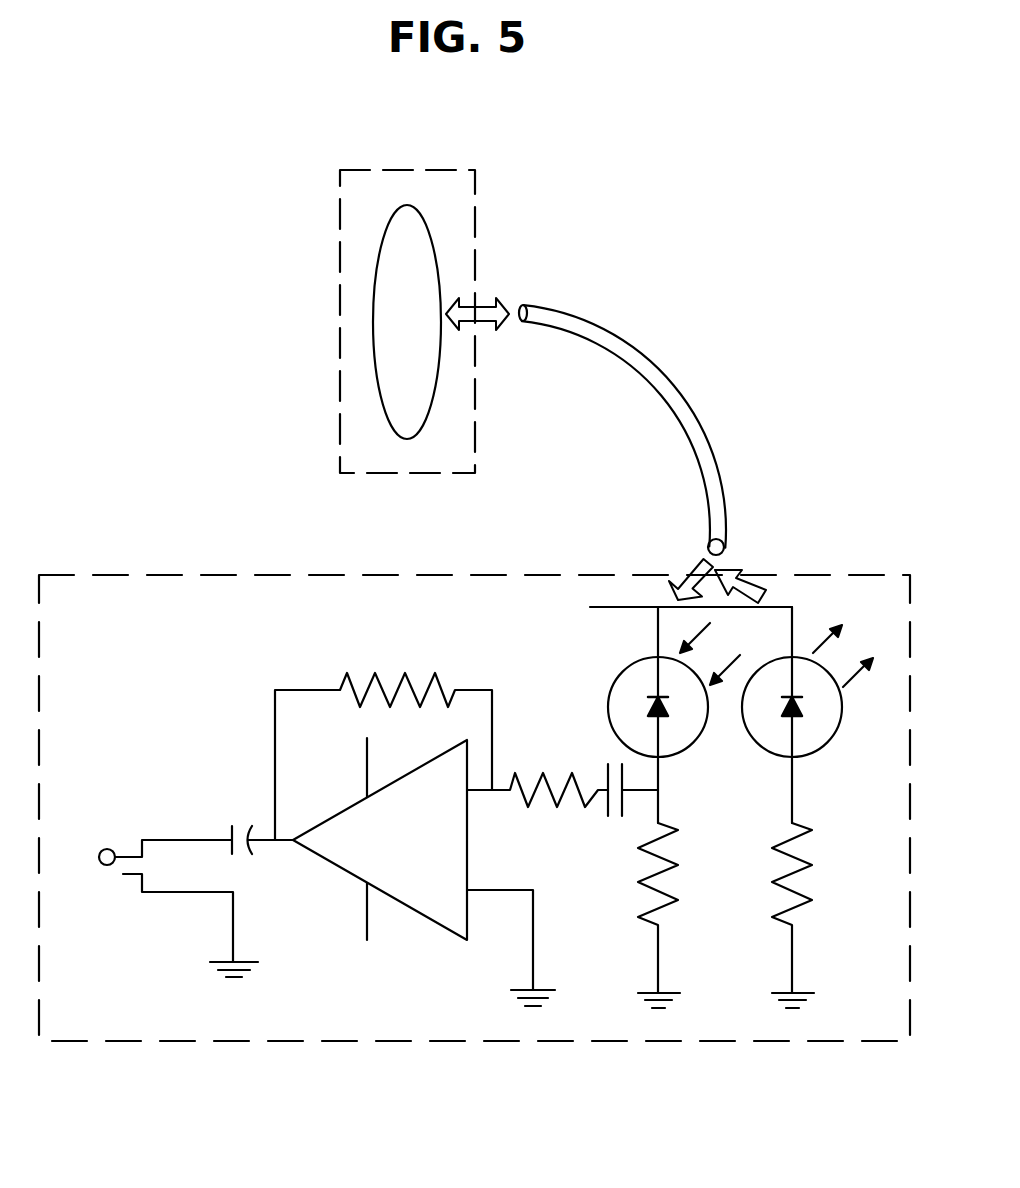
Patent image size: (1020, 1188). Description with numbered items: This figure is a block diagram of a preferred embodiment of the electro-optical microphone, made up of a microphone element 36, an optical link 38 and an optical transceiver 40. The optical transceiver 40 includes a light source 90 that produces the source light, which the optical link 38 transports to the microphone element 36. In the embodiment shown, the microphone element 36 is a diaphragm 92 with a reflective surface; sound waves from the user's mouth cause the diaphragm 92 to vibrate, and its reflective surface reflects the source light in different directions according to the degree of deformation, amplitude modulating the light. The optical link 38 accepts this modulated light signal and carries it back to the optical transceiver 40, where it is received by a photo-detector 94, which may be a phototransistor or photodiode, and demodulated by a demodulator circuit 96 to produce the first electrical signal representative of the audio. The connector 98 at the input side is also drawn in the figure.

The microphone element 36 is at (440, 172).
The diaphragm 92 is at (394, 335).
The optical link 38 is at (627, 337).
The optical transceiver 40 is at (173, 575).
The photo-detector 94 is at (690, 740).
The light source 90 is at (826, 740).
The demodulator circuit 96 is at (367, 853).
The input connector 98 is at (158, 840).